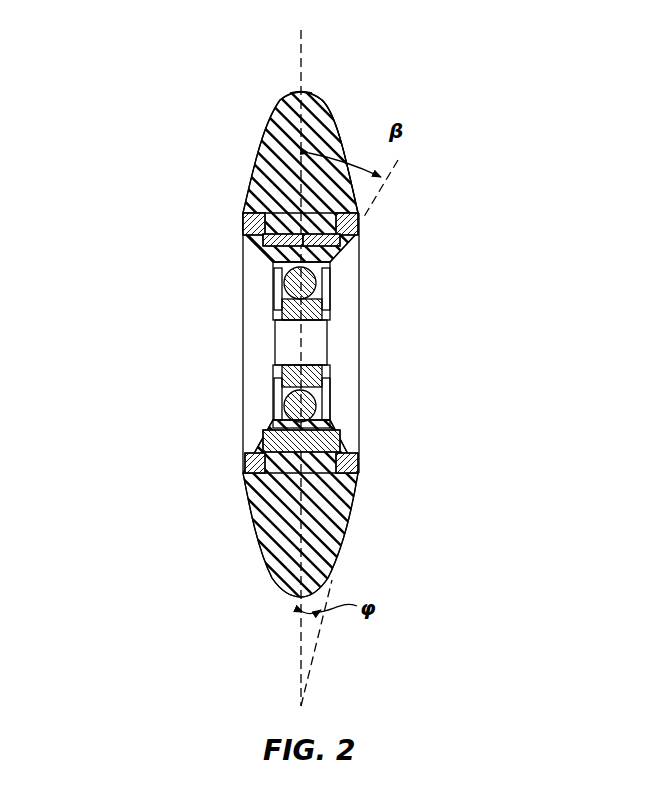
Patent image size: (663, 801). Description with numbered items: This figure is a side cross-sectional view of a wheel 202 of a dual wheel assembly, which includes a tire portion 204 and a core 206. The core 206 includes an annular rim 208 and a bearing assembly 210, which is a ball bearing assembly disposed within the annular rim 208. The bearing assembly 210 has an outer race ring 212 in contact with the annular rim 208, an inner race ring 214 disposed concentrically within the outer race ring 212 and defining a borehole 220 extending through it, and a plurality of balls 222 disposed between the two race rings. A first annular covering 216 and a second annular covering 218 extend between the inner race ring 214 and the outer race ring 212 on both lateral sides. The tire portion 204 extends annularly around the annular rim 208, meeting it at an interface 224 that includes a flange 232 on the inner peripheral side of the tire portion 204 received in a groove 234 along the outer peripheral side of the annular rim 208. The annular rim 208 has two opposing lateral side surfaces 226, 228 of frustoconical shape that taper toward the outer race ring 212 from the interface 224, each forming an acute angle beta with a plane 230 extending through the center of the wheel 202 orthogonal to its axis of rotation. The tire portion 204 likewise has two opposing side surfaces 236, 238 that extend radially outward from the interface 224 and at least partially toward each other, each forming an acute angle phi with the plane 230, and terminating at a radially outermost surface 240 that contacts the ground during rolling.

The wheel 202 is at (122, 108).
The tire portion 204 is at (287, 510).
The core 206 is at (236, 300).
The annular rim 208 is at (350, 225).
The bearing assembly 210 is at (339, 298).
The outer race ring 212 is at (345, 430).
The inner race ring 214 is at (332, 371).
The first annular covering 216 is at (337, 388).
The second annular covering 218 is at (278, 393).
The borehole 220 is at (313, 345).
The balls 222 is at (274, 405).
The interface 224 is at (250, 193).
The first lateral side surface 226 is at (262, 258).
The second lateral side surface 228 is at (352, 250).
The plane 230 is at (301, 50).
The flange 232 is at (325, 470).
The groove 234 is at (347, 455).
The first side surface 236 is at (258, 148).
The second side surface 238 is at (345, 135).
The radially outermost surface 240 is at (305, 93).